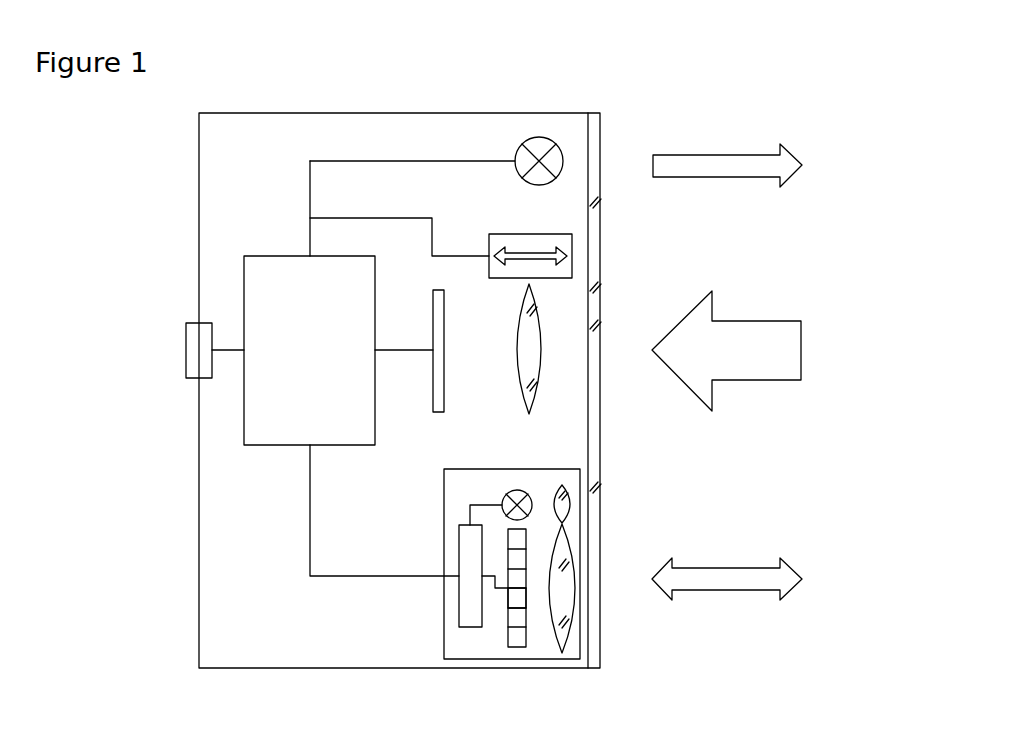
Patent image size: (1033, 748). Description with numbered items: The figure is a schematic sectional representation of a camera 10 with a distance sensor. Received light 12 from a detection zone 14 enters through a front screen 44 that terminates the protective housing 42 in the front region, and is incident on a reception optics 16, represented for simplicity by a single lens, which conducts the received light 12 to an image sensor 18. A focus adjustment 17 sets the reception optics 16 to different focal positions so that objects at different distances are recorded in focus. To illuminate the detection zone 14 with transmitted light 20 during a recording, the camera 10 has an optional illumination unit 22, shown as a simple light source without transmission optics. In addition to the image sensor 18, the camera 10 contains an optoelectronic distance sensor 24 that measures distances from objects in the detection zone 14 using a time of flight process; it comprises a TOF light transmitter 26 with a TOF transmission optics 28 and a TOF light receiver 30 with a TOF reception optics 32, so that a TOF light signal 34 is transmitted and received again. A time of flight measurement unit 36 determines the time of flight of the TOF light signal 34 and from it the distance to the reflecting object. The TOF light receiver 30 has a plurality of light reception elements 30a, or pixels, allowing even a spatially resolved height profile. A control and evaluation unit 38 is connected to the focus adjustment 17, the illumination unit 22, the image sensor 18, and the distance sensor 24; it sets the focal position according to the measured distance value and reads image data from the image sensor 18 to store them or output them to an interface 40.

The camera 10 is at (608, 90).
The received light 12 is at (743, 362).
The detection zone 14 is at (912, 132).
The reception optics 16 is at (526, 347).
The focus adjustment 17 is at (512, 234).
The image sensor 18 is at (444, 362).
The transmitted light 20 is at (693, 160).
The illumination unit 22 is at (532, 152).
The optoelectronic distance sensor 24 is at (442, 625).
The TOF light transmitter 26 is at (517, 490).
The TOF transmission optics 28 is at (565, 500).
The TOF light receiver 30 is at (525, 648).
The light reception elements 30a is at (517, 618).
The TOF reception optics 32 is at (568, 595).
The TOF light signal 34 is at (767, 580).
The time of flight measurement unit 36 is at (459, 560).
The control and evaluation unit 38 is at (268, 427).
The interface 40 is at (198, 350).
The housing 42 is at (198, 497).
The front screen 44 is at (600, 249).